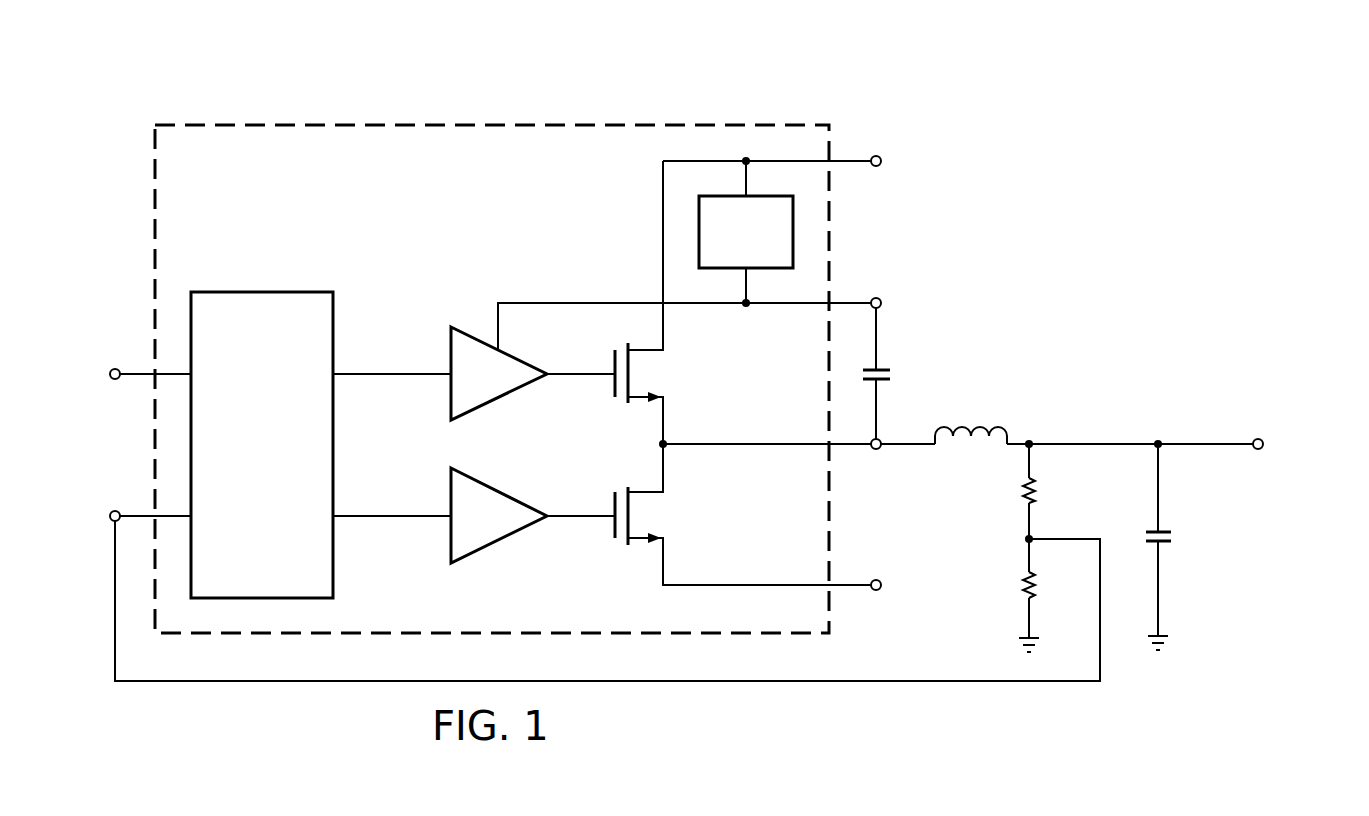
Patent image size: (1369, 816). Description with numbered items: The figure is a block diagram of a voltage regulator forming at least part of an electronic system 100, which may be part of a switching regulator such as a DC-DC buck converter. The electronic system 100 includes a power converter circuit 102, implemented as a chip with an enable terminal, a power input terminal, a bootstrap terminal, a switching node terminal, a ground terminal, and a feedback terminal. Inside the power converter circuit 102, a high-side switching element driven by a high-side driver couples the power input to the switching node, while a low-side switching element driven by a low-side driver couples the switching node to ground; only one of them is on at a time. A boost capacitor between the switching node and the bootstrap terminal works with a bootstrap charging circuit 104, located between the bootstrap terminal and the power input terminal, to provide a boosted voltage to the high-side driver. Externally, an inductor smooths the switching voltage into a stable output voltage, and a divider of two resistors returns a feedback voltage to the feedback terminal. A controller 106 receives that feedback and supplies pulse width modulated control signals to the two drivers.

The electronic system 100 is at (1166, 191).
The power converter circuit 102 is at (391, 112).
The bootstrap charging circuit 104 is at (727, 248).
The controller 106 is at (243, 462).